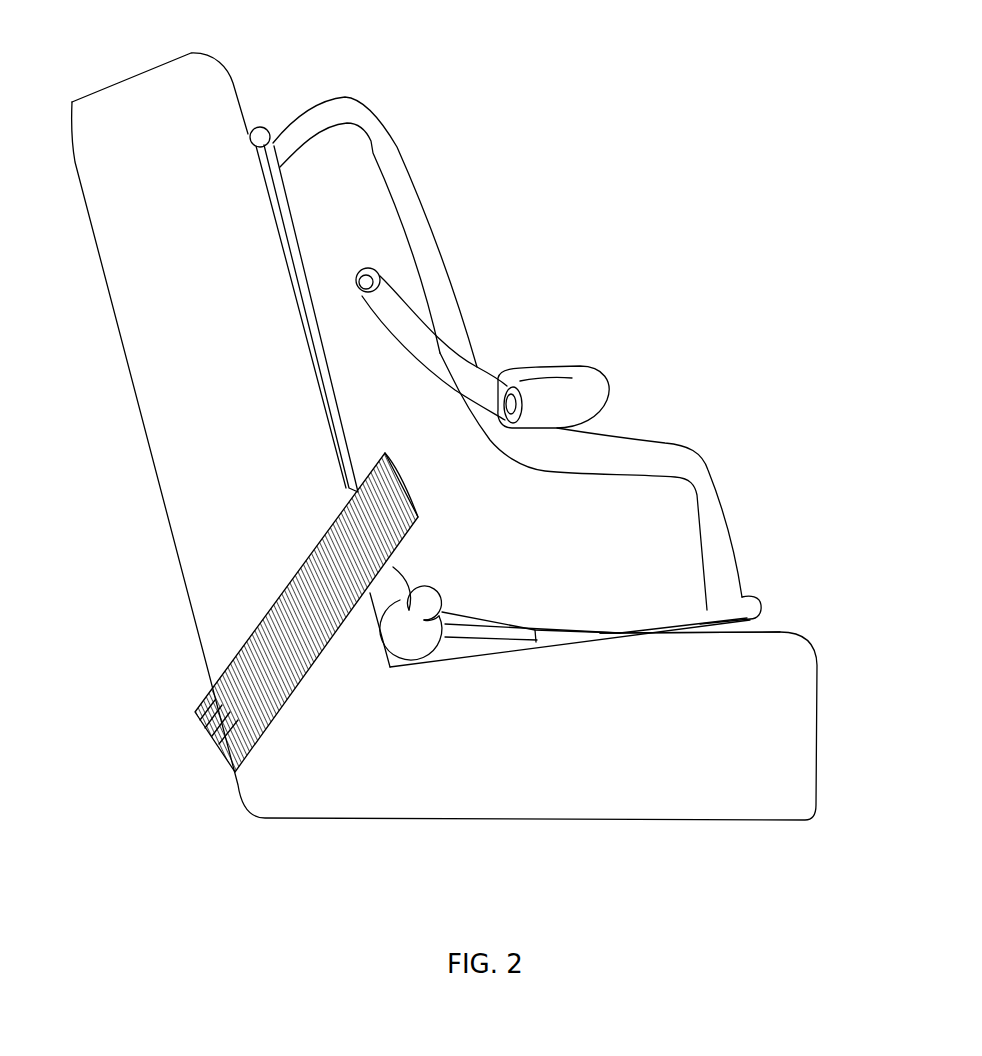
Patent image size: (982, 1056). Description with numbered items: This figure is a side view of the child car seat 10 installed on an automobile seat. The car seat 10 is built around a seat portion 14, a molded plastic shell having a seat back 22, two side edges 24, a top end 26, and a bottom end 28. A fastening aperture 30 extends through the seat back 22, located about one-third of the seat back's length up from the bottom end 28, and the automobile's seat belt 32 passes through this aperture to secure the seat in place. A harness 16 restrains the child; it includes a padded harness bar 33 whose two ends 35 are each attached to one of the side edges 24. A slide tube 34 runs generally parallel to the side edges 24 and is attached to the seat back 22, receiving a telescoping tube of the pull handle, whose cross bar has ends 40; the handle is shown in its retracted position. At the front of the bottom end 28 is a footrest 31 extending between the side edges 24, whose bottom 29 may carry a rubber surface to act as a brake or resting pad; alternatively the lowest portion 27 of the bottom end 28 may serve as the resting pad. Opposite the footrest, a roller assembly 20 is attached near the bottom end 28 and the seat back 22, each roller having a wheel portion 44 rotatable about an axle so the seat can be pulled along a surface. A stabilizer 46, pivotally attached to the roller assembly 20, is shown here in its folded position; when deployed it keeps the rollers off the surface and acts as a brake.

The child car seat 10 is at (539, 398).
The seat portion 14 is at (697, 450).
The harness 16 is at (592, 370).
The roller assembly 20 is at (441, 655).
The seat back 22 is at (320, 293).
The side edges 24 is at (573, 481).
The top end 26 is at (289, 126).
The lowest portion 27 is at (650, 634).
The bottom end 28 is at (540, 630).
The bottom of footrest 29 is at (745, 620).
The fastening aperture 30 is at (383, 452).
The footrest 31 is at (762, 604).
The seat belt 32 is at (318, 560).
The harness bar 33 is at (597, 402).
The slide tube 34 is at (287, 228).
The ends of harness bar 35 is at (390, 300).
The ends of cross bar 40 is at (250, 137).
The wheel portion 44 is at (389, 652).
The stabilizer 46 is at (500, 640).